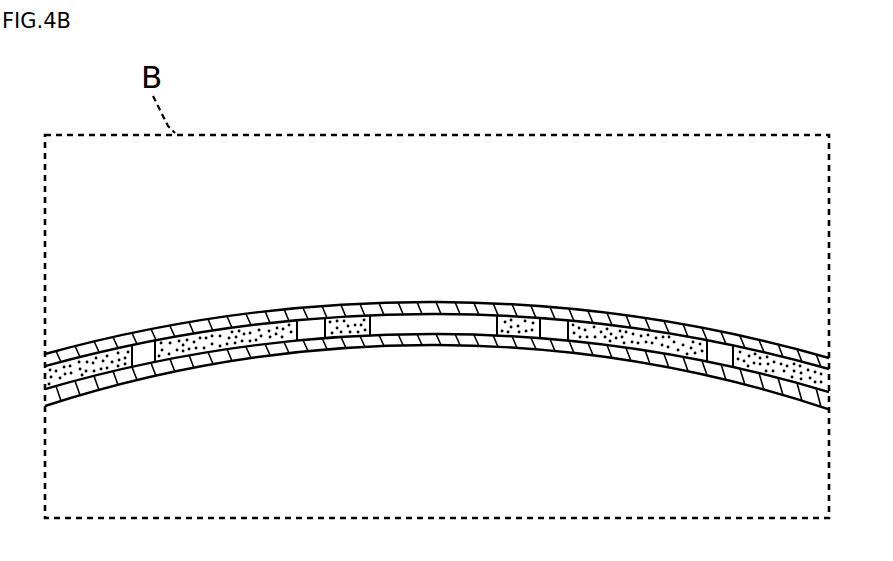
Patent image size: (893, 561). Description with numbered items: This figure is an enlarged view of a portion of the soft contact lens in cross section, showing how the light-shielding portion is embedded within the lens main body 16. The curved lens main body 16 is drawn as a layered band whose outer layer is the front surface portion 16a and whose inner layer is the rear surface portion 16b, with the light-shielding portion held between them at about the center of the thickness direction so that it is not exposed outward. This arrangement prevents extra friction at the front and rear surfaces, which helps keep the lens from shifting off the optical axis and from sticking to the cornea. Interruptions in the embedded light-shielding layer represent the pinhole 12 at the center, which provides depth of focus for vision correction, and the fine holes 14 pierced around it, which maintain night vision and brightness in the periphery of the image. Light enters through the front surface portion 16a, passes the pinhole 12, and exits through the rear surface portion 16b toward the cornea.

The pinhole 12 is at (493, 322).
The fine holes 14 is at (140, 350).
The lens main body 16 is at (437, 344).
The front surface portion 16a is at (357, 306).
The rear surface portion 16b is at (312, 350).